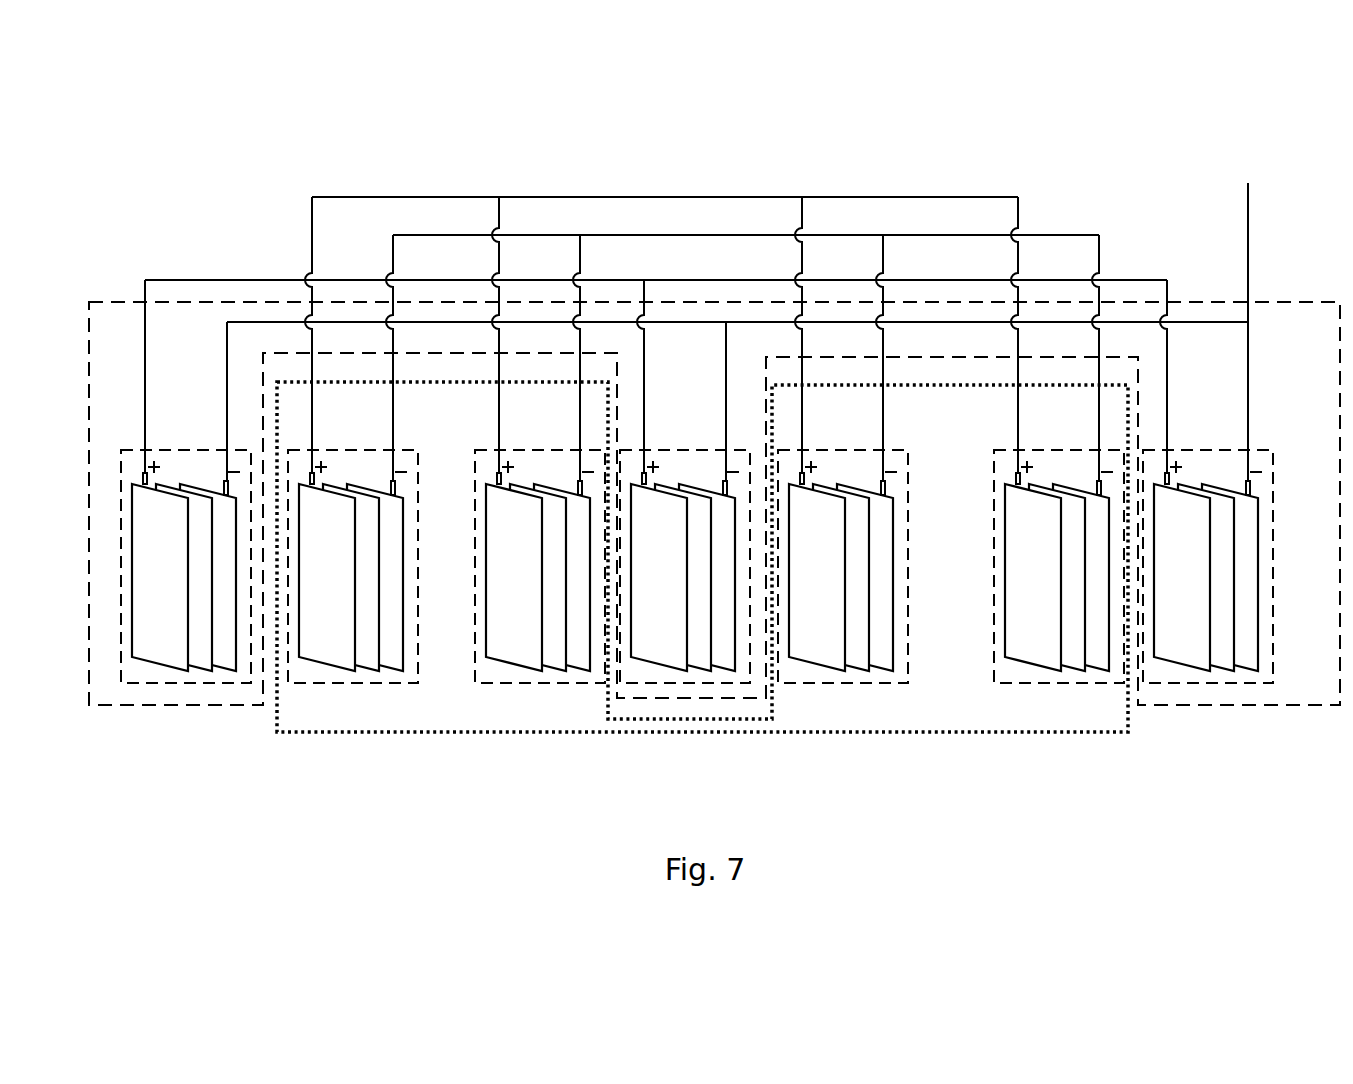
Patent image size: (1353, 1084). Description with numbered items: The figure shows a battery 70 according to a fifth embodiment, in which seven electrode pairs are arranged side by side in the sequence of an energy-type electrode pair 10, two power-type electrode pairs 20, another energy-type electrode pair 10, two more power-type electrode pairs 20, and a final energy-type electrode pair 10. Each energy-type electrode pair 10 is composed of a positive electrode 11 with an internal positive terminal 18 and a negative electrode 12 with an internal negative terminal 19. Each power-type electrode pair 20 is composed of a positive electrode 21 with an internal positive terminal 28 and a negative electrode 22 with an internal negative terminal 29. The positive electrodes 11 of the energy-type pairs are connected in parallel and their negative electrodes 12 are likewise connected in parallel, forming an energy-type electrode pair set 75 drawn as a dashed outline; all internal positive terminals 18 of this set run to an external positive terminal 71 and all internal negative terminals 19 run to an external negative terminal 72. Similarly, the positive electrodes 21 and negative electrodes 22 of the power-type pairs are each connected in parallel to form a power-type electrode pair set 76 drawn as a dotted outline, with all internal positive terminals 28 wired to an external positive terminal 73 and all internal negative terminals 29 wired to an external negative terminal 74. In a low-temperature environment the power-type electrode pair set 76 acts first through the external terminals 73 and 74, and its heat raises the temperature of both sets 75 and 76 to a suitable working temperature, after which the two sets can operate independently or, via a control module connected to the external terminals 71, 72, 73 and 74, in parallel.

The battery 70 is at (173, 125).
The energy-type electrode pair 10 is at (118, 525).
The positive electrode 11 is at (158, 664).
The negative electrode 12 is at (218, 667).
The internal positive terminal 18 is at (143, 473).
The internal negative terminal 19 is at (225, 481).
The power-type electrode pair 20 is at (414, 448).
The positive electrode 21 is at (324, 664).
The negative electrode 22 is at (386, 667).
The internal positive terminal 28 is at (310, 473).
The internal negative terminal 29 is at (391, 481).
The external positive terminal 71 is at (243, 280).
The external negative terminal 72 is at (745, 314).
The external positive terminal 73 is at (595, 197).
The external negative terminal 74 is at (702, 235).
The energy-type electrode pair set 75 is at (1290, 706).
The power-type electrode pair set 76 is at (955, 733).